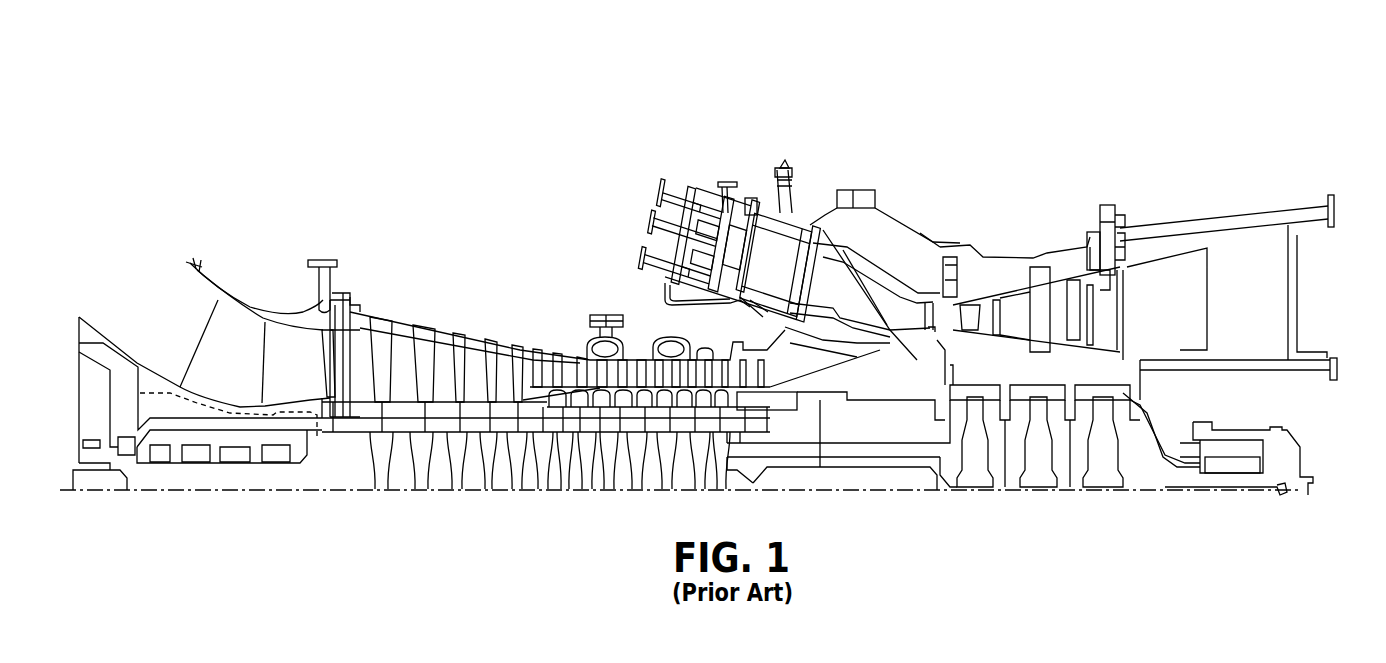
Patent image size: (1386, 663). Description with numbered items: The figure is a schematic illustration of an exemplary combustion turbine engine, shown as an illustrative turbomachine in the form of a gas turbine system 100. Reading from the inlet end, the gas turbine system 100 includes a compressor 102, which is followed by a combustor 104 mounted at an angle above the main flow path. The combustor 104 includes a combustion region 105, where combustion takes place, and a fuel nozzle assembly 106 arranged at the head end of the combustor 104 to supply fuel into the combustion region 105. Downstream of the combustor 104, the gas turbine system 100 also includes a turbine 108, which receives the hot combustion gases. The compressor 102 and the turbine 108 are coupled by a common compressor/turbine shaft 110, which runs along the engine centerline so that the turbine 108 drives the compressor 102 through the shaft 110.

The gas turbine system 100 is at (228, 124).
The compressor 102 is at (437, 333).
The combustor 104 is at (794, 132).
The combustion region 105 is at (777, 261).
The fuel nozzle assembly 106 is at (775, 243).
The turbine 108 is at (1083, 247).
The common compressor/turbine shaft 110 is at (362, 437).